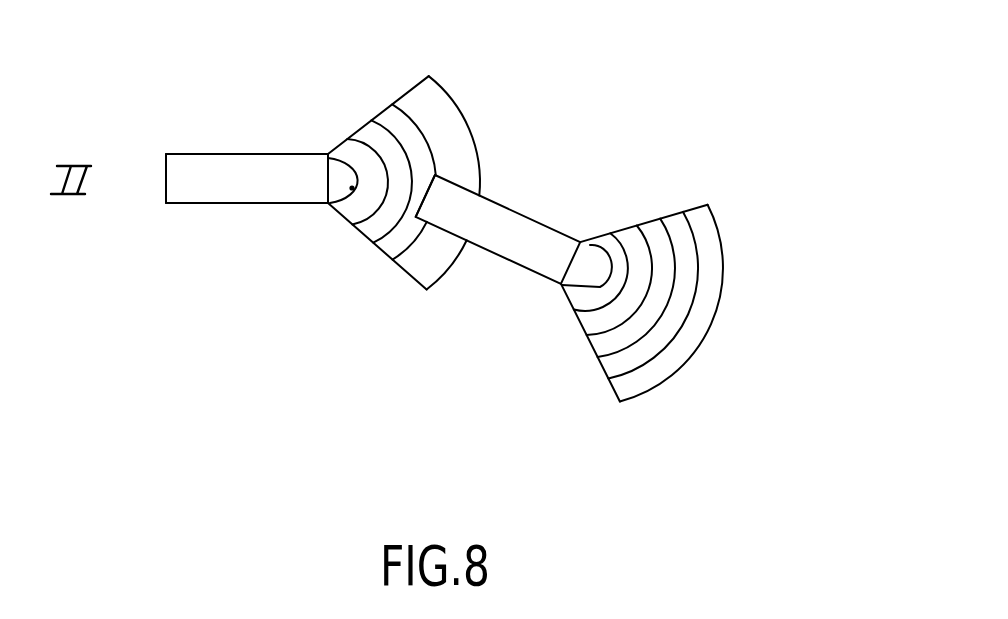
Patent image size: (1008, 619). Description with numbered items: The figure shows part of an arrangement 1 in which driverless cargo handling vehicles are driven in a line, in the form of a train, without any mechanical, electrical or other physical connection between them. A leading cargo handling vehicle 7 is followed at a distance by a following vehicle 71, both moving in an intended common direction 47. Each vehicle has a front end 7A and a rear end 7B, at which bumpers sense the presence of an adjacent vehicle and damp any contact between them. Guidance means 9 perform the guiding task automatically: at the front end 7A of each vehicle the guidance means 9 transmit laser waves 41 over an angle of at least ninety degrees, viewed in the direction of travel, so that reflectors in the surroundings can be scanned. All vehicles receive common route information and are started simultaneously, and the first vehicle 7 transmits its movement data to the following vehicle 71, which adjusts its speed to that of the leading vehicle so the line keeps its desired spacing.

The arrangement 1 is at (784, 114).
The cargo handling vehicle 7 is at (510, 218).
The following vehicle 71 is at (243, 160).
The front end of the vehicle 7A is at (325, 154).
The rear end of the vehicle 7B is at (493, 98).
The guidance means 9 is at (340, 190).
The laser waves 41 is at (432, 265).
The common direction 47 is at (546, 445).